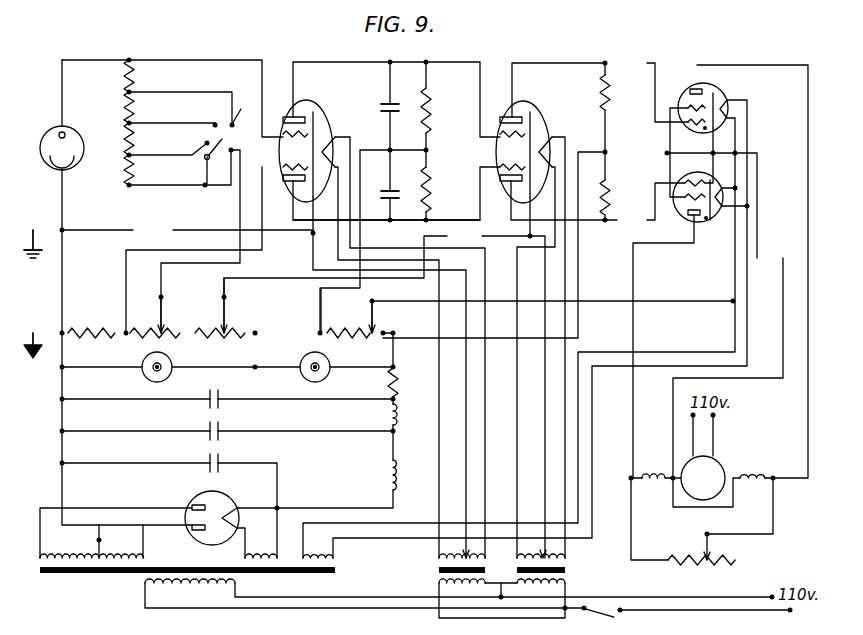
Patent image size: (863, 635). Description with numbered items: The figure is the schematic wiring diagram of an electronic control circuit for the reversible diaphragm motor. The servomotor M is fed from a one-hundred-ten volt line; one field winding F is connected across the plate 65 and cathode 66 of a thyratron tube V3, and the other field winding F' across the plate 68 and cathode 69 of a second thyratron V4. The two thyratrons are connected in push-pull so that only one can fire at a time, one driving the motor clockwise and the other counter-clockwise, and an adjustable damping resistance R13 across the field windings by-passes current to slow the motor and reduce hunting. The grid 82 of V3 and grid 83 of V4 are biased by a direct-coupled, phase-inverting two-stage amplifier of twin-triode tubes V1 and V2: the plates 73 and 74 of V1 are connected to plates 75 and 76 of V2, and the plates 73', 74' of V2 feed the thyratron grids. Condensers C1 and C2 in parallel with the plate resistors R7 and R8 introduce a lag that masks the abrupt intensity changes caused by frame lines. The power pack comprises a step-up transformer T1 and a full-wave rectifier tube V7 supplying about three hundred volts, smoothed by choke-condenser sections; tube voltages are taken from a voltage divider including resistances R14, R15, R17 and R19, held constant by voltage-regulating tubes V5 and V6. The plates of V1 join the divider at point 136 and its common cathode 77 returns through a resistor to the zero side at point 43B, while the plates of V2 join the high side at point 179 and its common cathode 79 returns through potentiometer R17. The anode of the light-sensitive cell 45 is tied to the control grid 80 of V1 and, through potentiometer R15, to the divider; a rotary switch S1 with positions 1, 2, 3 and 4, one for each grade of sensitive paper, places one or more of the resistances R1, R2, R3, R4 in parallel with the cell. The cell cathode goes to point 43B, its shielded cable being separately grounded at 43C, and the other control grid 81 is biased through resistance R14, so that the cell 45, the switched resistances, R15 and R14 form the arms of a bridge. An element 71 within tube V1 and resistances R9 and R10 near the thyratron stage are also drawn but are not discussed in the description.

The light-sensitive cell 45 is at (48, 136).
The resistance R1 is at (124, 82).
The resistance R2 is at (124, 108).
The resistance R3 is at (124, 139).
The resistance R4 is at (124, 172).
The switch position 1 is at (242, 107).
The switch position 2 is at (215, 124).
The switch position 3 is at (206, 143).
The switch position 4 is at (204, 158).
The rotary switch S1 is at (217, 162).
The shield ground 43C is at (58, 228).
The zero-side input point 43B is at (58, 332).
The first amplifier tube V1 is at (327, 98).
The plate 73 is at (285, 99).
The control grid 80 is at (303, 132).
The cathode 71 is at (315, 114).
The common cathode 77 is at (330, 124).
The control grid 81 is at (282, 164).
The plate 74 is at (283, 196).
The condenser C1 is at (393, 106).
The condenser C2 is at (393, 192).
The plate resistor R7 is at (432, 112).
The plate resistor R8 is at (432, 196).
The second amplifier tube V2 is at (523, 101).
The plate 73' is at (503, 98).
The plate 75 is at (526, 134).
The common cathode 79 is at (540, 122).
The plate 76 is at (502, 166).
The plate 74' is at (502, 199).
The resistor R9 is at (611, 96).
The resistor R10 is at (611, 196).
The thyratron tube V3 is at (715, 92).
The plate 65 is at (692, 88).
The cathode 66 is at (728, 92).
The grid 82 is at (689, 130).
The grid 83 is at (694, 181).
The second thyratron tube V4 is at (680, 220).
The cathode 69 is at (710, 222).
The plate 68 is at (694, 220).
The biasing resistance R14 is at (113, 330).
The potentiometer R15 is at (168, 332).
The potentiometer R17 is at (234, 332).
The voltage-divider point 136 is at (320, 332).
The voltage-divider resistance R19 is at (346, 324).
The voltage regulating tube V5 is at (170, 362).
The voltage regulating tube V6 is at (328, 362).
The high-side divider point 179 is at (396, 372).
The full wave rectifier tube V7 is at (196, 502).
The step-up transformer T1 is at (198, 571).
The servomotor M is at (716, 466).
The field winding F' is at (652, 464).
The field winding F is at (752, 464).
The adjustable damping resistance R13 is at (710, 566).